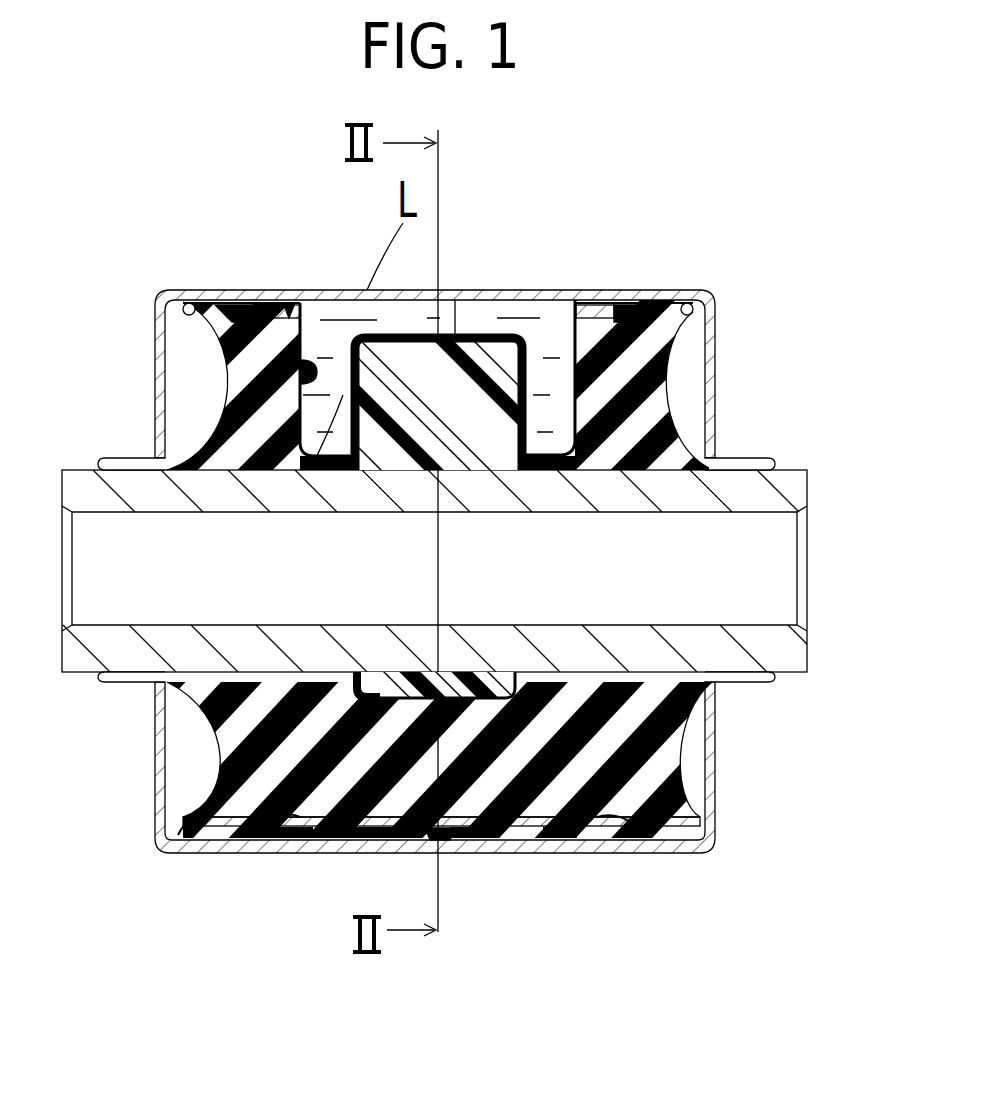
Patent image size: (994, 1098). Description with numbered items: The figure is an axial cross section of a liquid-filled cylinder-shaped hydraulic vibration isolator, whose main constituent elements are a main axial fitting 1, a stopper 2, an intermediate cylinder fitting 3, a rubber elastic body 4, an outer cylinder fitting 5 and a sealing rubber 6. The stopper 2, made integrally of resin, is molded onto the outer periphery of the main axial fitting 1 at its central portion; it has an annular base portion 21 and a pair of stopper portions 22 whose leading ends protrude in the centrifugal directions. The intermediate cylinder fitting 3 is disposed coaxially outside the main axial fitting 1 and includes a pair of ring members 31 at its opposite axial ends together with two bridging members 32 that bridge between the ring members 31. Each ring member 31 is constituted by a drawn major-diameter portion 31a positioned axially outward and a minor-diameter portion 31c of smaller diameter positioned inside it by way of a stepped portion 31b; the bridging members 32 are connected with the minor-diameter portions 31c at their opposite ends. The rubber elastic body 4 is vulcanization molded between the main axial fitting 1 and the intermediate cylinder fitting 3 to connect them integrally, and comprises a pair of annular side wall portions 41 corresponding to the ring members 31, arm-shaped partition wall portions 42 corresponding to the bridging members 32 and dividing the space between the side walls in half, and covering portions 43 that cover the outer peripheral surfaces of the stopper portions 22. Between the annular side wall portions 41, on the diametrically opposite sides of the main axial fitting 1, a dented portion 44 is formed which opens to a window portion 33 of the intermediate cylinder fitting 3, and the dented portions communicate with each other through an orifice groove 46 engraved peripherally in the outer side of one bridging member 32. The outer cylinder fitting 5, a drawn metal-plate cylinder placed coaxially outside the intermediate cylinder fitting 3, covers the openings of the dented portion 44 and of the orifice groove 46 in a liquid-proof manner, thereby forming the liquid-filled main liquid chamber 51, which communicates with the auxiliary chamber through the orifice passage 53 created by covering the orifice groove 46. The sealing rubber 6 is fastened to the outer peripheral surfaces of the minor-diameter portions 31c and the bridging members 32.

The main axial fitting 1 is at (814, 494).
The stopper 2 is at (401, 491).
The annular base portion 21 is at (393, 690).
The stopper portion 22 is at (388, 377).
The intermediate cylinder fitting 3 is at (712, 822).
The ring member 31 is at (303, 196).
The drawn major-diameter portion 31a is at (190, 302).
The stepped portion 31b is at (248, 302).
The minor-diameter portion 31c is at (282, 305).
The bridging member 32 is at (517, 832).
The window portion 33 is at (323, 313).
The rubber elastic body 4 is at (439, 604).
The annular side wall portion 41 is at (225, 398).
The arm-shaped partition wall portion 42 is at (380, 740).
The covering portion 43 is at (456, 335).
The dented portion 44 is at (300, 368).
The orifice groove 46 is at (433, 850).
The outer cylinder fitting 5 is at (476, 543).
The main liquid chamber 51 is at (517, 300).
The orifice passage 53 is at (447, 850).
The sealing rubber 6 is at (288, 313).